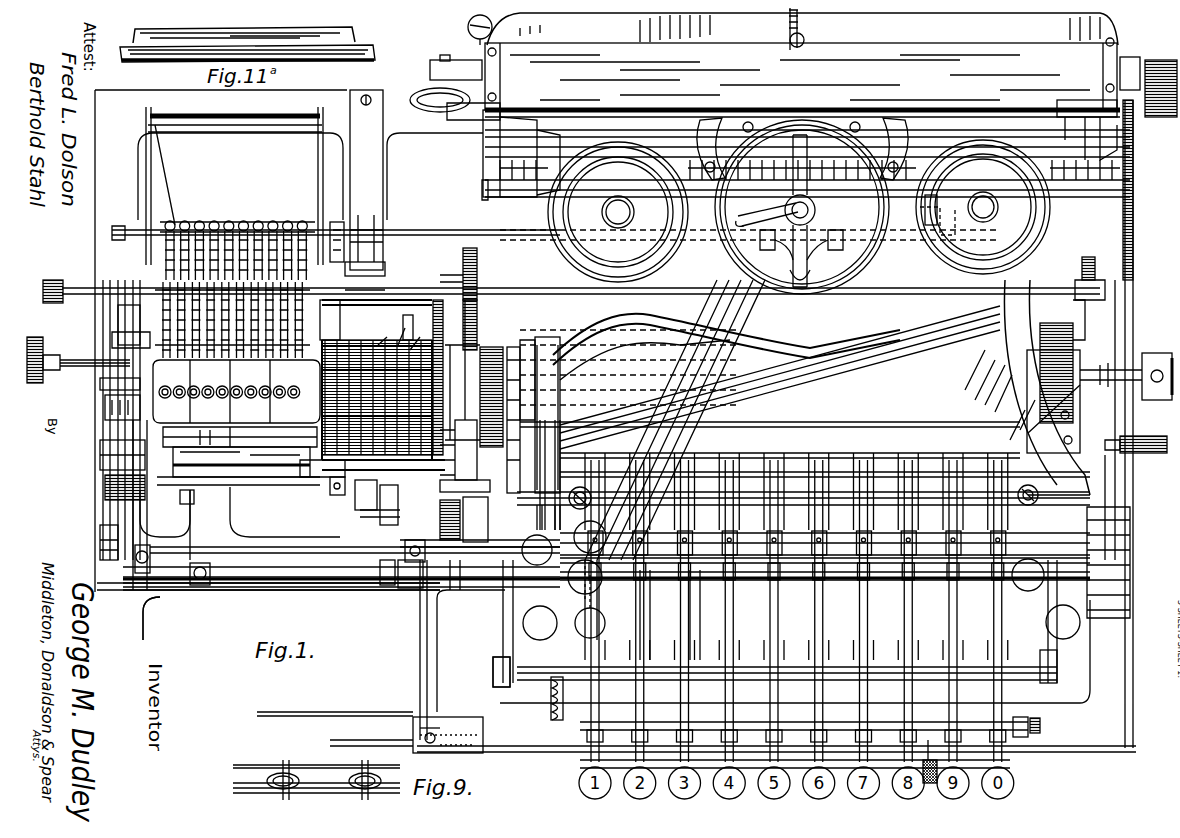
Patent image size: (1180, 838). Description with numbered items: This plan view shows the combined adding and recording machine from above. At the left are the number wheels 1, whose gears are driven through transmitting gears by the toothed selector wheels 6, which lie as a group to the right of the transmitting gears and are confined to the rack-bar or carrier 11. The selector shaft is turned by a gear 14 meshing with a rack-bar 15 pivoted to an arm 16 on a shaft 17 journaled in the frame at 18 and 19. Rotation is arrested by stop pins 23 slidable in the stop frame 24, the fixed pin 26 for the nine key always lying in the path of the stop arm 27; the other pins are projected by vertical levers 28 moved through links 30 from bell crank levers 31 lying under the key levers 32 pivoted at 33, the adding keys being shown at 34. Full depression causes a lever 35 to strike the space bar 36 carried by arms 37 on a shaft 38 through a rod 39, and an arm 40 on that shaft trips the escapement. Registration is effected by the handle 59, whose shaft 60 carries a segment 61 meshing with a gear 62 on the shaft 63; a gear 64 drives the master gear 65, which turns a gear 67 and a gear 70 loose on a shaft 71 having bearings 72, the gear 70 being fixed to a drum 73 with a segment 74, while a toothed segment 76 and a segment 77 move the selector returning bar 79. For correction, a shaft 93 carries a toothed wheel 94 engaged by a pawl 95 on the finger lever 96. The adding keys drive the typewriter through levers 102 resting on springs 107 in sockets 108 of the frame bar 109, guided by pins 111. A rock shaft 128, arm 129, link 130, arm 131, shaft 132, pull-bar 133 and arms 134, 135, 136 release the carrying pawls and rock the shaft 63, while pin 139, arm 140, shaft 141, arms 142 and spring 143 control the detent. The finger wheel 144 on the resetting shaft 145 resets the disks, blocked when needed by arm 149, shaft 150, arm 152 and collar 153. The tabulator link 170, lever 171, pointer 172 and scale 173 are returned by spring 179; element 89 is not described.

In FIG. 1, the number wheels 1 is at (236, 362).
In FIG. 1, the toothed selector wheels 6 is at (406, 329).
In FIG. 1, the rack-bar or carrier 11 is at (185, 498).
In FIG. 1, the gear 14 is at (112, 385).
In FIG. 1, the rack-bar 15 is at (112, 398).
In FIG. 1, the arm 16 is at (150, 590).
In FIG. 1, the shaft 17 is at (213, 553).
In FIG. 1, the frame journal 18 is at (110, 542).
In FIG. 1, the frame journal 19 is at (1068, 540).
In FIG. 1, the stop pins 23 is at (538, 337).
In FIG. 1, the stop frame 24 is at (497, 340).
In FIG. 1, the fixed stop pin 26 is at (478, 462).
In FIG. 1, the stop arm 27 is at (475, 360).
In FIG. 1, the vertical levers 28 is at (505, 345).
In FIG. 1, the links 30 is at (740, 385).
In FIG. 1, the bell crank levers 31 is at (790, 380).
In FIG. 1, the key lever 32 is at (856, 375).
In FIG. 1, the key lever pivot 33 is at (742, 290).
In FIG. 1, the adding keys 34 is at (580, 782).
In FIG. 1, the lever 35 is at (645, 617).
In FIG. 11A, the space bar 36 is at (337, 35).
In FIG. 1, the space bar 36 is at (755, 668).
In FIG. 1, the arms 37 is at (503, 620).
In FIG. 1, the shaft 38 is at (335, 587).
In FIG. 11A, the rod 39 is at (335, 62).
In FIG. 1, the rod 39 is at (530, 682).
In FIG. 1, the arm 40 is at (185, 520).
In FIG. 1, the handle 59 is at (1158, 353).
In FIG. 1, the handle shaft 60 is at (1135, 392).
In FIG. 1, the segment 61 is at (1082, 335).
In FIG. 1, the gear 62 is at (1090, 257).
In FIG. 1, the shaft 63 is at (536, 290).
In FIG. 1, the gear 64 is at (463, 262).
In FIG. 1, the master gear 65 is at (463, 328).
In FIG. 1, the gear 67 is at (490, 486).
In FIG. 1, the gear 70 is at (480, 522).
In FIG. 1, the shaft 71 is at (370, 512).
In FIG. 1, the bearings 72 is at (340, 510).
In FIG. 1, the drum 73 is at (454, 521).
In FIG. 1, the segment 74 is at (450, 575).
In FIG. 1, the toothed segment 76 is at (350, 482).
In FIG. 1, the toothed segment 77 is at (421, 337).
In FIG. 1, the selector returning bar 79 is at (418, 318).
In FIG. 1, the block 89 is at (405, 551).
In FIG. 1, the shaft 93 is at (420, 668).
In FIG. 1, the toothed wheel 94 is at (436, 735).
In FIG. 1, the pawl 95 is at (395, 742).
In FIG. 1, the finger lever 96 is at (336, 713).
In FIG. 9, the levers 102 is at (290, 775).
In FIG. 9, the springs 107 is at (270, 780).
In FIG. 1, the sockets 108 is at (596, 724).
In FIG. 9, the sockets 108 is at (270, 788).
In FIG. 1, the frame bar 109 is at (665, 720).
In FIG. 9, the frame bar 109 is at (280, 774).
In FIG. 9, the pins 111 is at (352, 790).
In FIG. 1, the rock shaft 128 is at (310, 222).
In FIG. 1, the arm 129 is at (338, 222).
In FIG. 1, the link 130 is at (338, 342).
In FIG. 1, the arm 131 is at (362, 230).
In FIG. 1, the shaft 132 is at (523, 240).
In FIG. 1, the pull-bar 133 is at (938, 760).
In FIG. 1, the arm 134 is at (947, 212).
In FIG. 1, the arm 135 is at (382, 226).
In FIG. 1, the arm 136 is at (378, 268).
In FIG. 1, the pin 139 is at (410, 590).
In FIG. 1, the arm 140 is at (385, 575).
In FIG. 1, the shaft 141 is at (283, 477).
In FIG. 1, the arms 142 is at (120, 448).
In FIG. 1, the spring 143 is at (115, 490).
In FIG. 1, the finger wheel 144 is at (48, 337).
In FIG. 1, the resetting shaft 145 is at (110, 357).
In FIG. 1, the arm 149 is at (392, 334).
In FIG. 1, the shaft 150 is at (350, 340).
In FIG. 1, the arm 152 is at (148, 376).
In FIG. 1, the collar 153 is at (125, 343).
In FIG. 1, the link 170 is at (1128, 315).
In FIG. 1, the lever 171 is at (1130, 477).
In FIG. 1, the pointer 172 is at (1130, 454).
In FIG. 1, the scale 173 is at (1120, 580).
In FIG. 1, the spring 179 is at (1133, 250).